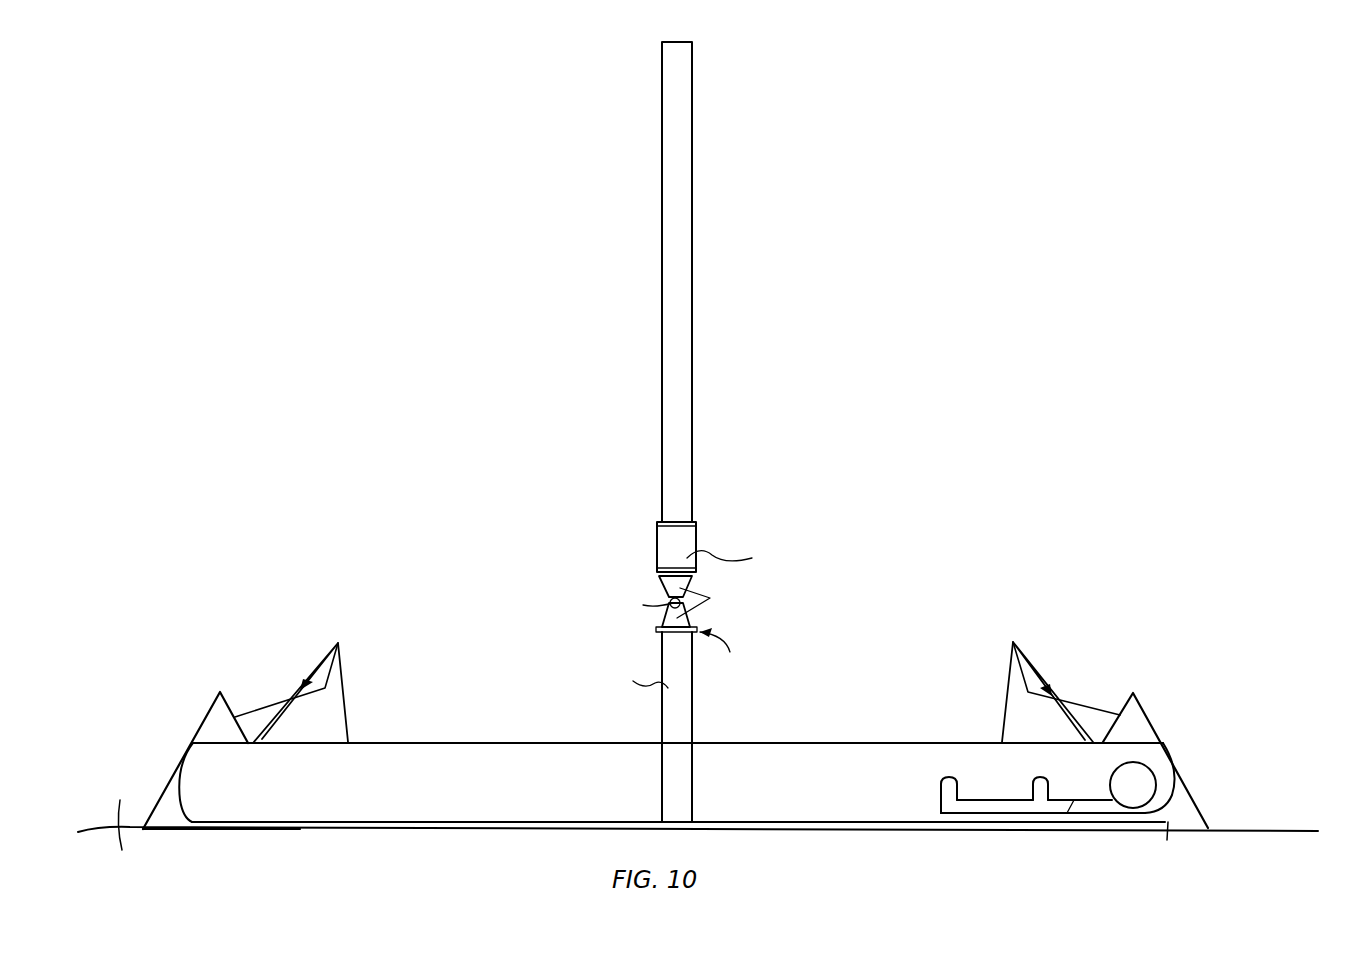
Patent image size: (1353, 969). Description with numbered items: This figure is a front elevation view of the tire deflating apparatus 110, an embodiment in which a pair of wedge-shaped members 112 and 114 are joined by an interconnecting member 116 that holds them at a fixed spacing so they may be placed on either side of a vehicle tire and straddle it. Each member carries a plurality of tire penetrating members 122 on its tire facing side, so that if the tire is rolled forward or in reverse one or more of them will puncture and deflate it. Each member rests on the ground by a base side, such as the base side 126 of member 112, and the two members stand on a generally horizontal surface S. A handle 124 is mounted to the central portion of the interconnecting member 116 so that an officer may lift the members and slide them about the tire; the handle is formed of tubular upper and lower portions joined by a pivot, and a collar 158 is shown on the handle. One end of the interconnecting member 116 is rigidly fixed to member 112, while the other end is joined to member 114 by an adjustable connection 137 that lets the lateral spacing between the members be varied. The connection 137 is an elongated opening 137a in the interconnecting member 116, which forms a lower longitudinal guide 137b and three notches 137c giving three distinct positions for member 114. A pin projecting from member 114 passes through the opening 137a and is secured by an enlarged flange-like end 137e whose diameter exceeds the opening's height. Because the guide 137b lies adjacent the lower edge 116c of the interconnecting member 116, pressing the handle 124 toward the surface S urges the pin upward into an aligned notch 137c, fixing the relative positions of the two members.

The tire deflating apparatus 110 is at (948, 188).
The member 112 is at (200, 722).
The member 114 is at (1145, 705).
The interconnecting member 116 is at (435, 753).
The lower edge 116c is at (757, 823).
The tire penetrating members 122 is at (677, 678).
The handle 124 is at (680, 122).
The base side 126 is at (240, 827).
The adjustable connection 137 is at (1033, 830).
The elongated opening 137a is at (988, 808).
The lower longitudinal guide 137b is at (948, 810).
The notches 137c is at (1040, 783).
The enlarged end 137e is at (1150, 780).
The collar 158 is at (697, 520).
The horizontal surface S is at (1243, 828).